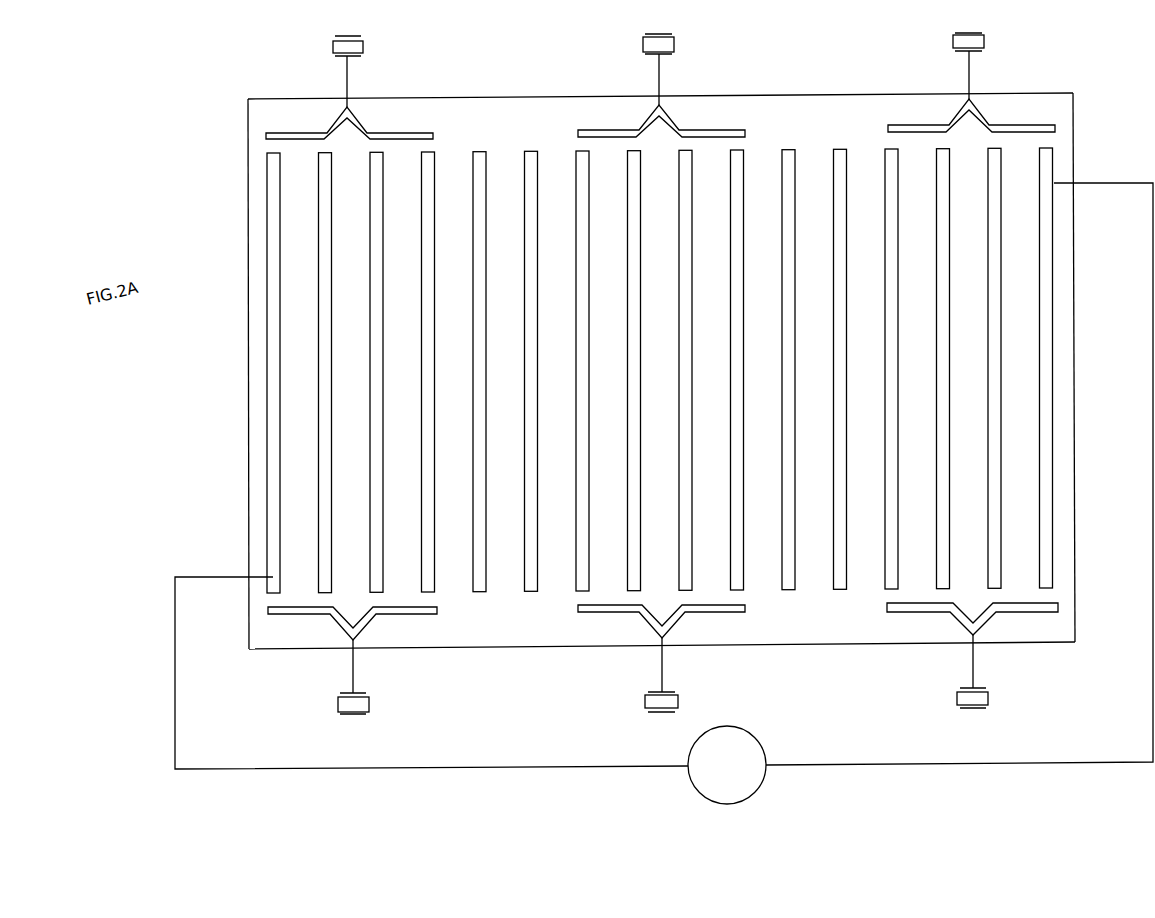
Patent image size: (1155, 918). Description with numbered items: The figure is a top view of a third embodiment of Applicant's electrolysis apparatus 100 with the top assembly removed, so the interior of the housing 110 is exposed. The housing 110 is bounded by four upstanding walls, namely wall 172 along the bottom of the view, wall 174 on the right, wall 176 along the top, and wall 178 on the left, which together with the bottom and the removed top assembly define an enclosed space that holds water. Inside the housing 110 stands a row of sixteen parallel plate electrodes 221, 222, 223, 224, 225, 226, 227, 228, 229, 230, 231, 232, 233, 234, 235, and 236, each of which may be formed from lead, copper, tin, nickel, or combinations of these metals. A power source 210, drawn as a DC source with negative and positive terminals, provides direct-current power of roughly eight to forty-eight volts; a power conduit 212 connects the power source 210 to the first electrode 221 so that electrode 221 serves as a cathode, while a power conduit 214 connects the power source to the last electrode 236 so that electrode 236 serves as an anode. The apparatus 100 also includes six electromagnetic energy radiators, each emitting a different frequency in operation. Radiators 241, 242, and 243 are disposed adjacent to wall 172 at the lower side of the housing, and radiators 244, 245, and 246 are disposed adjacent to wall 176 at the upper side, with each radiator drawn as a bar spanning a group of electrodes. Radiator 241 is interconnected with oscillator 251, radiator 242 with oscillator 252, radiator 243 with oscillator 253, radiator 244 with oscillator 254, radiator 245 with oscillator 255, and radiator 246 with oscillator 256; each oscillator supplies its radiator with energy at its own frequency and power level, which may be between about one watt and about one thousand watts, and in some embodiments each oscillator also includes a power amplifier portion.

The electrolysis apparatus 100 is at (553, 793).
The housing 110 is at (234, 388).
The wall 172 is at (565, 656).
The wall 174 is at (1074, 274).
The wall 176 is at (558, 96).
The wall 178 is at (247, 227).
The power source 210 is at (742, 800).
The power conduit 212 is at (418, 775).
The power conduit 214 is at (850, 762).
The electrode 221 is at (280, 185).
The electrode 222 is at (332, 192).
The electrode 223 is at (383, 233).
The electrode 224 is at (434, 272).
The electrode 225 is at (486, 303).
The electrode 226 is at (538, 340).
The electrode 227 is at (589, 378).
The electrode 228 is at (640, 410).
The electrode 229 is at (692, 455).
The electrode 230 is at (744, 490).
The electrode 231 is at (795, 175).
The electrode 232 is at (846, 200).
The electrode 233 is at (898, 238).
The electrode 234 is at (950, 275).
The electrode 235 is at (1001, 298).
The electrode 236 is at (1047, 330).
The electromagnetic energy radiator 241 is at (428, 612).
The electromagnetic energy radiator 242 is at (725, 611).
The electromagnetic energy radiator 243 is at (1025, 608).
The electromagnetic energy radiator 244 is at (1024, 126).
The electromagnetic energy radiator 245 is at (705, 131).
The electromagnetic energy radiator 246 is at (405, 133).
The oscillator 251 is at (351, 708).
The oscillator 252 is at (660, 706).
The oscillator 253 is at (968, 703).
The oscillator 254 is at (978, 42).
The oscillator 255 is at (668, 44).
The oscillator 256 is at (360, 44).